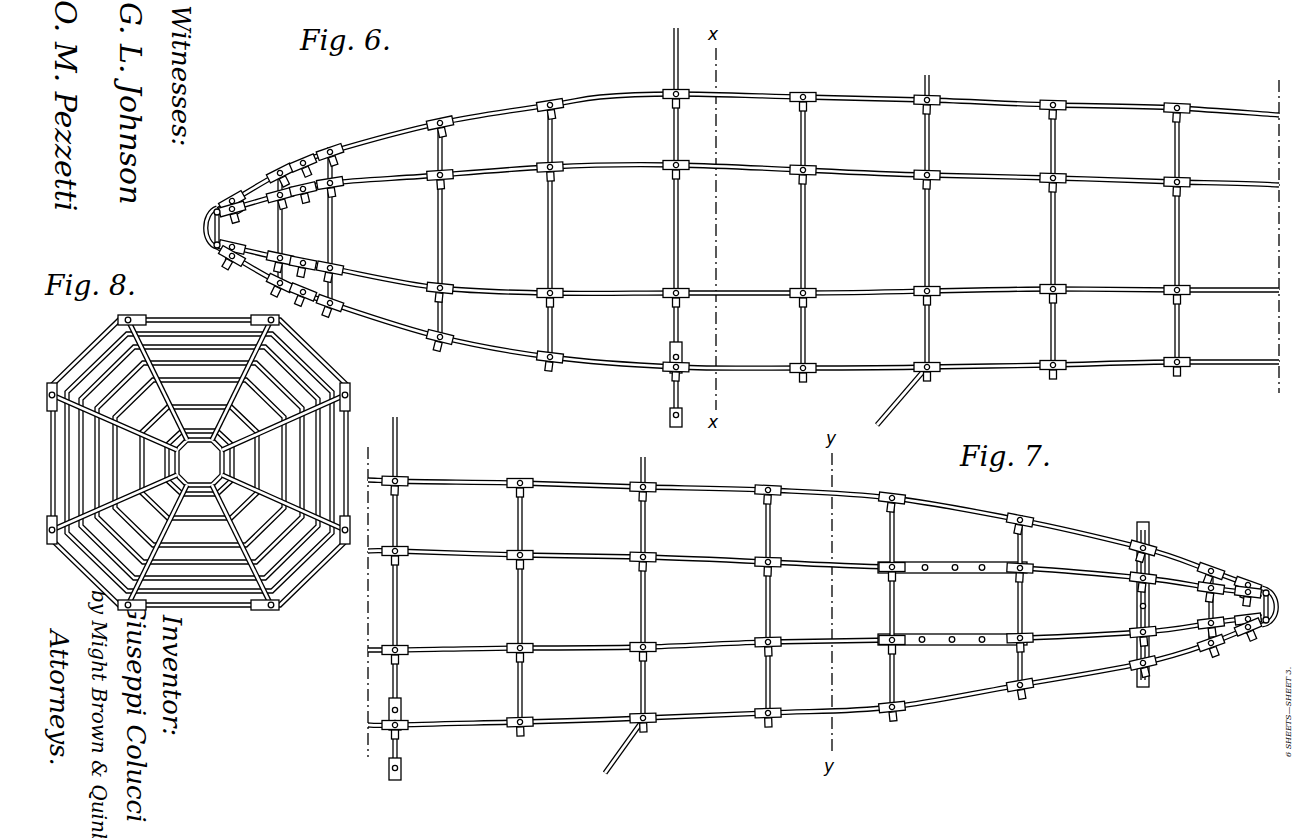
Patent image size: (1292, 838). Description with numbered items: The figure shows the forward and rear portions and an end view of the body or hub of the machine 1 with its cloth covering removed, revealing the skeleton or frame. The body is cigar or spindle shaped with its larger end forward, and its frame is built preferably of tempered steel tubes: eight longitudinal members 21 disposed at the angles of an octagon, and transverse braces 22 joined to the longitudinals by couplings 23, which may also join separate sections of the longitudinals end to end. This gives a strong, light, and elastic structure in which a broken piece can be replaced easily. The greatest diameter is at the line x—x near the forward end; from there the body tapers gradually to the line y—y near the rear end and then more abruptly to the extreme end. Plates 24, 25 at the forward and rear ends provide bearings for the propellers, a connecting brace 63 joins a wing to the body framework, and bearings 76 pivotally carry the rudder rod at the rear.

In FIG. 6, the airship frame 1 is at (721, 227).
In FIG. 6, the longitudinal members 21 is at (991, 104).
In FIG. 7, the longitudinal members 21 is at (705, 490).
In FIG. 8, the longitudinal members 21 is at (232, 392).
In FIG. 6, the transverse braces 22 is at (930, 151).
In FIG. 7, the transverse braces 22 is at (771, 612).
In FIG. 8, the transverse braces 22 is at (321, 362).
In FIG. 6, the couplings 23 is at (808, 180).
In FIG. 7, the couplings 23 is at (649, 556).
In FIG. 8, the couplings 23 is at (348, 400).
In FIG. 6, the plate 24 is at (208, 229).
In FIG. 7, the plate 25 is at (1277, 590).
In FIG. 6, the connecting brace 63 is at (675, 50).
In FIG. 7, the bearings 76 is at (1137, 532).